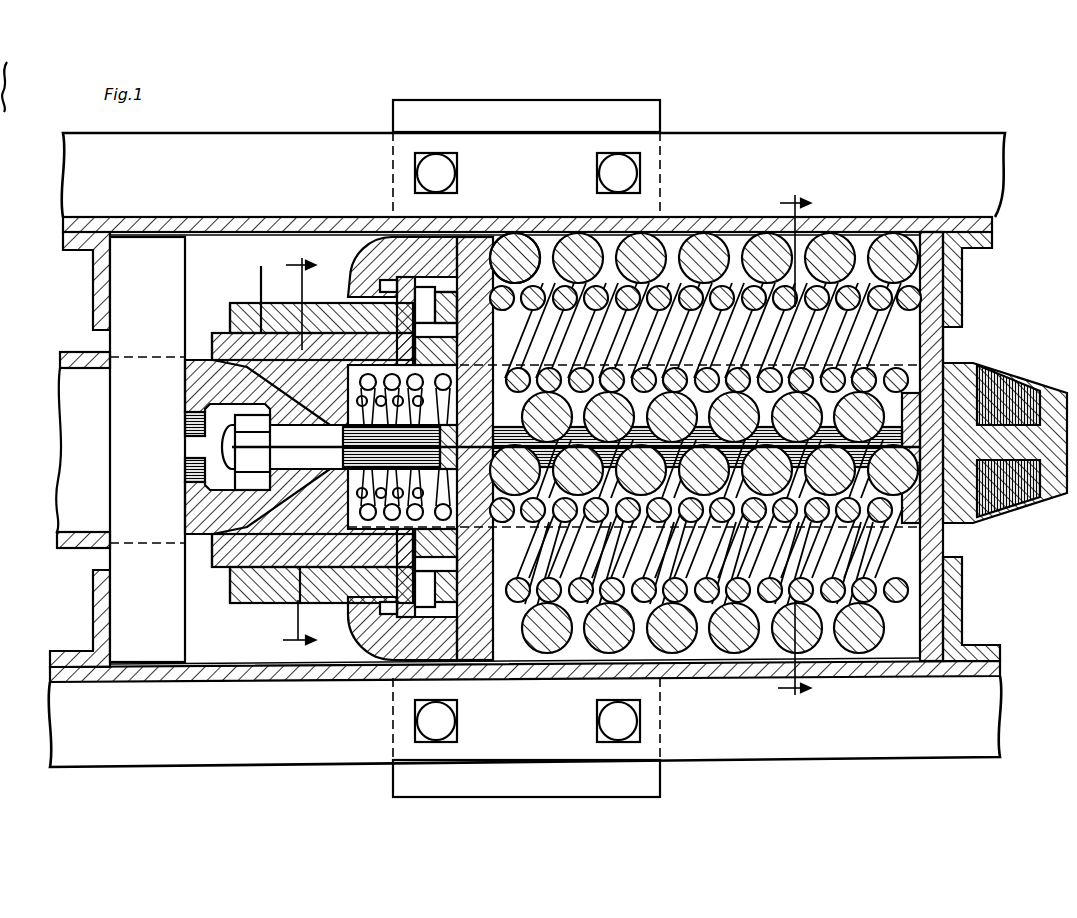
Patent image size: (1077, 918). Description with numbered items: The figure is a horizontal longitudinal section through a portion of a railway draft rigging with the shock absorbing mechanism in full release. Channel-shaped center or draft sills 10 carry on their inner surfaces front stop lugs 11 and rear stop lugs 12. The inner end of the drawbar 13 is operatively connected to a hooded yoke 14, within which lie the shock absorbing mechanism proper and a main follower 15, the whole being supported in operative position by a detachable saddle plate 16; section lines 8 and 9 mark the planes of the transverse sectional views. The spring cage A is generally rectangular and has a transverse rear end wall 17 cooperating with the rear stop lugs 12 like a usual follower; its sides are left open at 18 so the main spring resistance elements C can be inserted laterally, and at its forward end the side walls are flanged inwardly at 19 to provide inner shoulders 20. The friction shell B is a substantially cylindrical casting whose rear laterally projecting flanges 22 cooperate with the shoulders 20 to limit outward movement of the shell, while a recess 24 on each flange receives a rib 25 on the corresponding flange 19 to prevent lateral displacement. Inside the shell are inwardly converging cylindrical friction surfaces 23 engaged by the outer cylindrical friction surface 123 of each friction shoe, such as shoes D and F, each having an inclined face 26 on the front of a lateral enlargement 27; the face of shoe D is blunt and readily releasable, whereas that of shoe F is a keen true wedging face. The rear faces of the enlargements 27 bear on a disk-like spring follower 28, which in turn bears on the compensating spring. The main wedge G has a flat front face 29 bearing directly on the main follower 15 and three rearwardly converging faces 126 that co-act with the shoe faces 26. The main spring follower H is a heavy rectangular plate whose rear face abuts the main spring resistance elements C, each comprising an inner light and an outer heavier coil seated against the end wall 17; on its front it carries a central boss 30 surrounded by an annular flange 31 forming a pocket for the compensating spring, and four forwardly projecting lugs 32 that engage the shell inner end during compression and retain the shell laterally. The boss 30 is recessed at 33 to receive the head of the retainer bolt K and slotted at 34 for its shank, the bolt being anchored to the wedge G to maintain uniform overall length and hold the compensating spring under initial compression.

The section line 8— 8 is at (299, 452).
The section line 9— 9 is at (794, 449).
The center or draft sills 10 is at (995, 225).
The front stop lugs 11 is at (93, 297).
The rear stop lugs 12 is at (963, 287).
The drawbar 13 is at (72, 421).
The hooded yoke 14 is at (62, 357).
The main follower 15 is at (147, 449).
The saddle plate 16 is at (662, 114).
The transverse rear end wall 17 is at (945, 348).
The open sides 18 is at (740, 237).
The inwardly flanged side walls 19 is at (352, 270).
The inner shoulders 20 is at (398, 274).
The laterally projecting flanges 22 is at (418, 290).
The cylindrical friction surfaces 23 is at (283, 330).
The recess 24 is at (397, 273).
The rib 25 is at (380, 288).
The inclined face 26 is at (235, 302).
The lateral enlargement 27 is at (386, 447).
The spring follower 28 is at (336, 575).
The flat front face 29 is at (185, 384).
The central boss 30 is at (407, 447).
The annular flange 31 is at (436, 567).
The forwardly projecting lugs 32 is at (462, 275).
The recess 33 is at (535, 452).
The slot 34 is at (453, 446).
The outer cylindrical friction surface 123 is at (215, 333).
The rearwardly converging faces 126 is at (363, 447).
The spring cage A is at (540, 238).
The friction shell B is at (251, 303).
The main spring resistance elements C is at (712, 237).
The friction shoe D is at (212, 559).
The friction shoe F is at (255, 289).
The main wedge G is at (185, 508).
The main spring follower H is at (442, 292).
The retainer bolt K is at (230, 450).